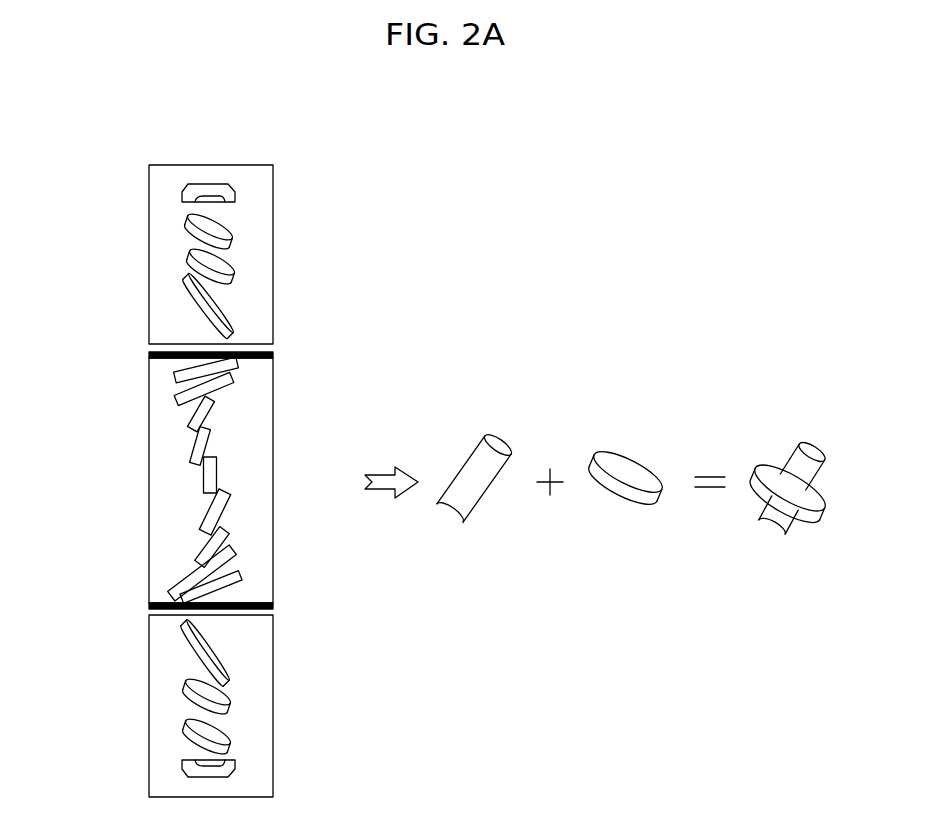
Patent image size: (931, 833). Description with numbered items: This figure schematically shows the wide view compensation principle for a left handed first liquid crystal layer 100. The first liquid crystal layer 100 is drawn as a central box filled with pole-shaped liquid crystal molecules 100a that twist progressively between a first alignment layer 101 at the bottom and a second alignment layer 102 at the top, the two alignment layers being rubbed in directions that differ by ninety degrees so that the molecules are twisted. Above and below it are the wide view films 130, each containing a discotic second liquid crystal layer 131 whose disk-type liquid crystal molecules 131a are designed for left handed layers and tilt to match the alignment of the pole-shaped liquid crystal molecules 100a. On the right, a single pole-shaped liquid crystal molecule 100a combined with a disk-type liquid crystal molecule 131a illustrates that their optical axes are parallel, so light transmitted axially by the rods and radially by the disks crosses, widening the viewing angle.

The wide view films (WVFs) 130 is at (126, 253).
The discotic liquid crystal layer (second liquid crystal layer) 131 is at (260, 310).
The disk-type liquid crystal molecules 131a is at (232, 229).
The first liquid crystal layer 100 is at (126, 461).
The pole-shaped liquid crystal molecules 100a is at (217, 480).
The first alignment layer 101 is at (272, 608).
The second alignment layer 102 is at (272, 356).